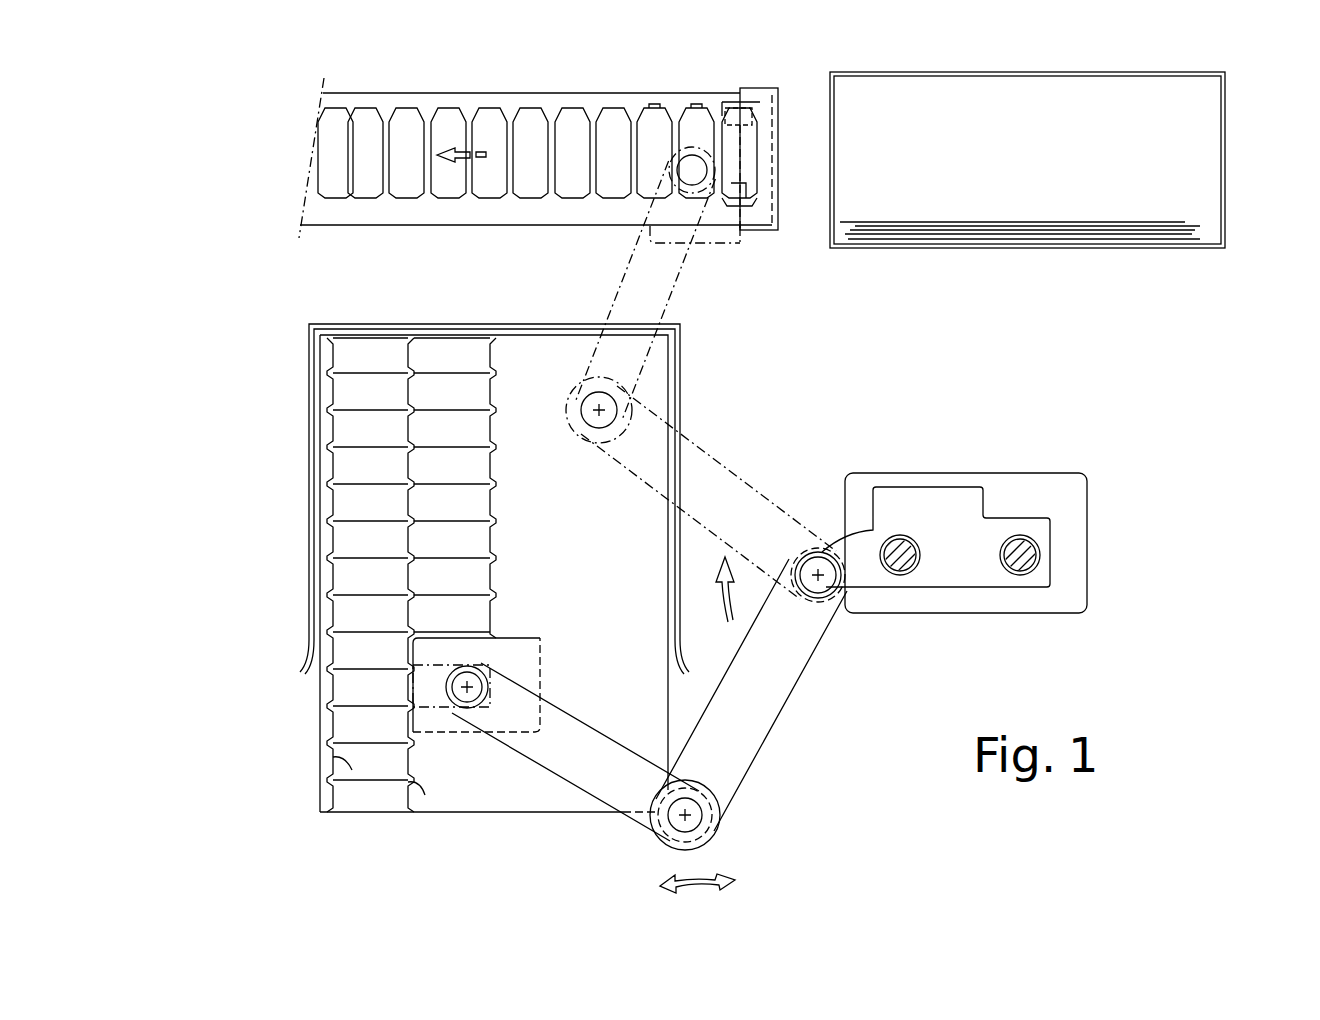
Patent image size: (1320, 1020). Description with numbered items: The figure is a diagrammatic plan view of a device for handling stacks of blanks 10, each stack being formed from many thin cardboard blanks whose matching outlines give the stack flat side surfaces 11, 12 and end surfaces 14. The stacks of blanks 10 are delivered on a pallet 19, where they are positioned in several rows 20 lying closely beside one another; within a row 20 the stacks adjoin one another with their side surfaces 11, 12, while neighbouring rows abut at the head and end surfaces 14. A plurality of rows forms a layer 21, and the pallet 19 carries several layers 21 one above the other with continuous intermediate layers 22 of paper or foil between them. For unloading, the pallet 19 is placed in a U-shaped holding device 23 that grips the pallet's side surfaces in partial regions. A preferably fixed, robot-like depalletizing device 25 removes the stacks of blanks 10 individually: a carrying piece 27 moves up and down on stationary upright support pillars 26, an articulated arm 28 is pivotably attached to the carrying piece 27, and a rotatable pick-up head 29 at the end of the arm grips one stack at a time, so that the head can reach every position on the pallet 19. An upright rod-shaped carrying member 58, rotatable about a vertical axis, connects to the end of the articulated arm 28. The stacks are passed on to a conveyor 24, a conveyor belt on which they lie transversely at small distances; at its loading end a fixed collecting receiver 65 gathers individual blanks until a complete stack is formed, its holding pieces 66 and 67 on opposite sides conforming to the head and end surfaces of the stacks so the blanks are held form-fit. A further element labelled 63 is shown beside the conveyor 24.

The stack of blanks 10 is at (524, 130).
The side surface 11 is at (393, 812).
The side surface 12 is at (330, 762).
The end surface 14 is at (407, 787).
The pallet 19 is at (294, 709).
The row 20 is at (508, 436).
The layer 21 is at (465, 790).
The intermediate layer 22 is at (1078, 222).
The holding device 23 is at (310, 487).
The conveyor 24 is at (283, 172).
The depalletizing device 25 is at (925, 442).
The support pillar 26 is at (1027, 540).
The carrying piece 27 is at (967, 588).
The articulated arm 28 is at (785, 728).
The pick-up head 29 is at (560, 632).
The carrying member 58 is at (452, 684).
The cassette 63 is at (1226, 158).
The collecting receiver 65 is at (730, 92).
The holding piece 66 is at (742, 112).
The holding piece 67 is at (752, 210).